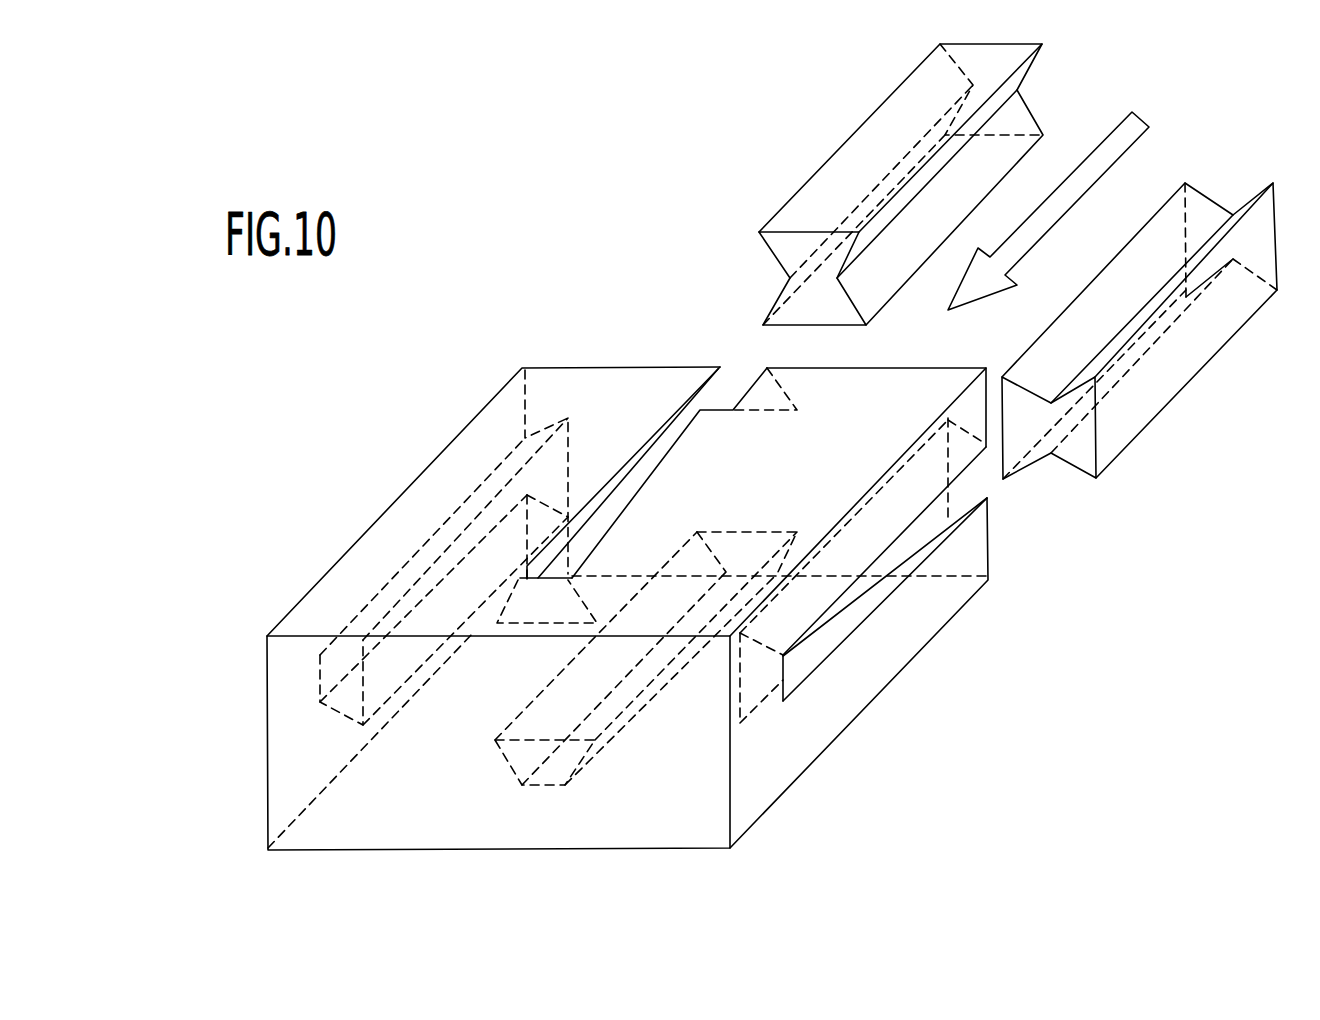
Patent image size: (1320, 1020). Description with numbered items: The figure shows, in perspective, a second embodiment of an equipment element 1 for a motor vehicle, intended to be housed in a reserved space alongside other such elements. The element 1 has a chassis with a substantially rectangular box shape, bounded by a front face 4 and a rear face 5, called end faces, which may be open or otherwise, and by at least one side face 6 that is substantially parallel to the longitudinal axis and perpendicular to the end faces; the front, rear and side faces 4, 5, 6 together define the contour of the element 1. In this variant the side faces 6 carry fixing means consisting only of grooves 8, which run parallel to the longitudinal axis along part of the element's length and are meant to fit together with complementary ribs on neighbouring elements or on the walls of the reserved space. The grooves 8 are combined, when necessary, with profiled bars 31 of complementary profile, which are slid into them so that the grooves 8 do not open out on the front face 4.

The equipment element 1 is at (248, 832).
The front face 4 is at (307, 765).
The rear face 5 is at (640, 413).
The side face 6 is at (340, 620).
The grooves 8 is at (457, 530).
The profiled bars 31 is at (849, 132).